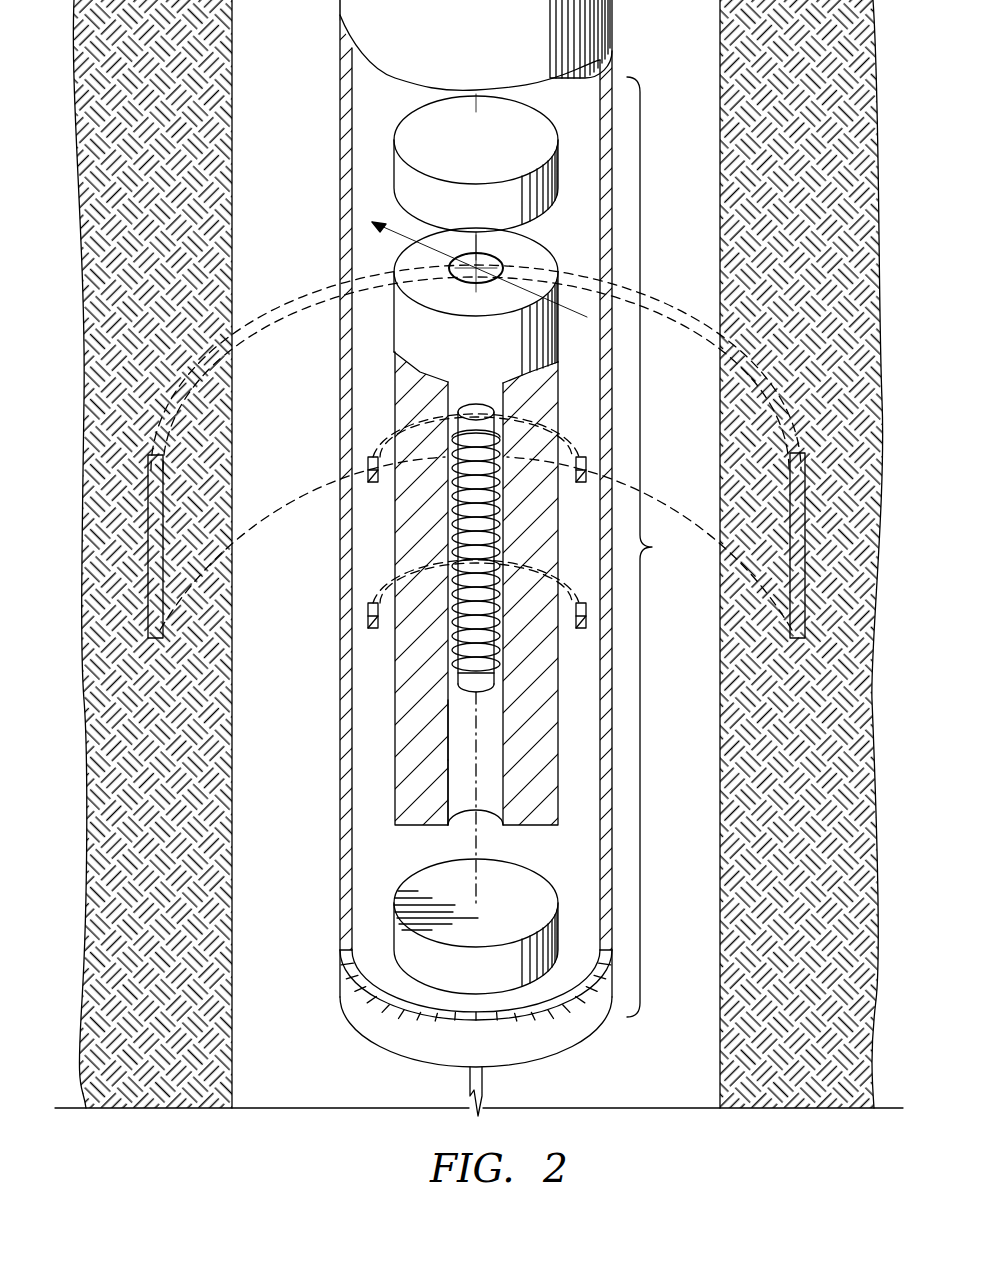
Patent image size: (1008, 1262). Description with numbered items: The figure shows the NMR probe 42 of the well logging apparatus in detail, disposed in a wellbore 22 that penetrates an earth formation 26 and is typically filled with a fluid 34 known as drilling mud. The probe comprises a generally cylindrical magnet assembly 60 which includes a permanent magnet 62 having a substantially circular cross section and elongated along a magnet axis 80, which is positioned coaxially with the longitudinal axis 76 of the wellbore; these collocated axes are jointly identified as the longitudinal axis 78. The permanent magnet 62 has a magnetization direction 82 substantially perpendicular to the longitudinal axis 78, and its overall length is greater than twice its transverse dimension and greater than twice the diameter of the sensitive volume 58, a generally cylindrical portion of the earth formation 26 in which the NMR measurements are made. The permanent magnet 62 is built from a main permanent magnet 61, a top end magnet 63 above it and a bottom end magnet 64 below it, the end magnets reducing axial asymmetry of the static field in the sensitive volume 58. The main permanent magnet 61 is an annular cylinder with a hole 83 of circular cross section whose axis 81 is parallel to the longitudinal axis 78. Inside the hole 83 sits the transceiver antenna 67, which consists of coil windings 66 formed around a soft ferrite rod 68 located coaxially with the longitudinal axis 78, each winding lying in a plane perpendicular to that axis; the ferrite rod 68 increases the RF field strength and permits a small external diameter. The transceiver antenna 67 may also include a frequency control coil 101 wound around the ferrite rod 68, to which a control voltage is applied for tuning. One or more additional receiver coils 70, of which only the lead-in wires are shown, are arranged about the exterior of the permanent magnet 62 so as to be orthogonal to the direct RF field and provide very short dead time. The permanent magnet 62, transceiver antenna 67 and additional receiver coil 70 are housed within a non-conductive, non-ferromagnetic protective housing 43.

The wellbore 22 is at (283, 781).
The earth formation 26 is at (190, 200).
The fluid 34 is at (698, 781).
The NMR probe 42 is at (333, 567).
The protective housing 43 is at (346, 126).
The sensitive volume 58 is at (156, 486).
The magnet assembly 60 is at (656, 547).
The main permanent magnet 61 is at (403, 335).
The permanent magnet 62 is at (378, 188).
The top end magnet 63 is at (418, 122).
The bottom end magnet 64 is at (428, 878).
The coil windings 66 is at (500, 510).
The transceiver antenna 67 is at (488, 685).
The soft ferrite rod 68 is at (470, 412).
The additional receiver coil 70 is at (373, 482).
The longitudinal axis of the wellbore 76 is at (470, 1079).
The longitudinal axis 78 is at (479, 846).
The magnet axis 80 is at (475, 716).
The axis of the magnet hole 81 is at (475, 758).
The magnetization direction 82 is at (568, 312).
The hole 83 is at (463, 785).
The frequency control coil 101 is at (455, 447).